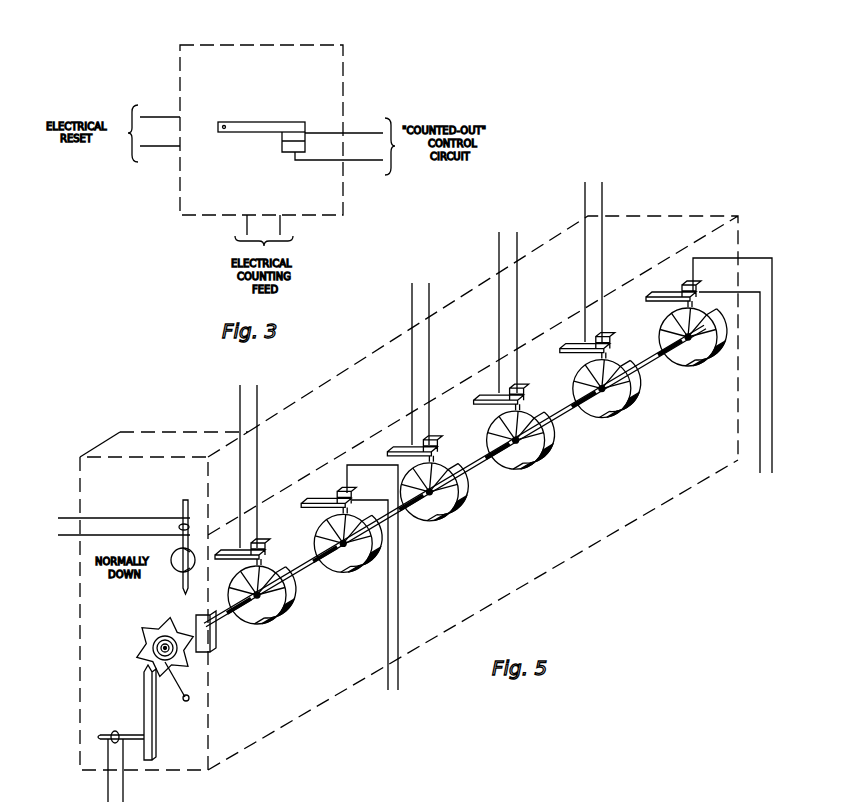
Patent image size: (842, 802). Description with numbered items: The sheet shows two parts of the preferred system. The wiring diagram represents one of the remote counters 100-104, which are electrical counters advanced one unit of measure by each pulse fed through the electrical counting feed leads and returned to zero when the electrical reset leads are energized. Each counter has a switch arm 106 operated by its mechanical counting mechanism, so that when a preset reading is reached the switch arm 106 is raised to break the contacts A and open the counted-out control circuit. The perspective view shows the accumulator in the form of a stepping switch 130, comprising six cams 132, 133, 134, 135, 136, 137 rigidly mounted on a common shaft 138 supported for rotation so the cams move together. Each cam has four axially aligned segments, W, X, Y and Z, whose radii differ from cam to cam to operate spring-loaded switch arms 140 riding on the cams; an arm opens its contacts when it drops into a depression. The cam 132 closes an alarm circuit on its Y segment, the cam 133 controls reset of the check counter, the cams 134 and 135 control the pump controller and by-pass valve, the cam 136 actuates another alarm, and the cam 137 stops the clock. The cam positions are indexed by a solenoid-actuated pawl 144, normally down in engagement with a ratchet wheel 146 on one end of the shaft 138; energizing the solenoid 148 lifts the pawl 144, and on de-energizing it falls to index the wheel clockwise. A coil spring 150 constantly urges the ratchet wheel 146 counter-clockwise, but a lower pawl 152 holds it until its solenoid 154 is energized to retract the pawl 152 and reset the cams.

In FIG. 3, the remote counters 100-104 is at (296, 45).
In FIG. 3, the switch arm 106 is at (272, 120).
In FIG. 3, the contacts A is at (280, 143).
In FIG. 5, the stepping switch 130 is at (568, 562).
In FIG. 5, the cam 132 is at (270, 616).
In FIG. 5, the cam 133 is at (343, 568).
In FIG. 5, the cam 134 is at (442, 515).
In FIG. 5, the cam 135 is at (527, 462).
In FIG. 5, the cam 136 is at (615, 410).
In FIG. 5, the cam 137 is at (690, 365).
In FIG. 5, the common shaft 138 is at (224, 620).
In FIG. 5, the switch arms 140 is at (707, 280).
In FIG. 5, the solenoid-actuated pawl 144 is at (178, 582).
In FIG. 5, the ratchet wheel 146 is at (140, 642).
In FIG. 5, the solenoid 148 is at (196, 508).
In FIG. 5, the coil spring 150 is at (152, 663).
In FIG. 5, the lower pawl 152 is at (152, 719).
In FIG. 5, the solenoid 154 is at (116, 732).